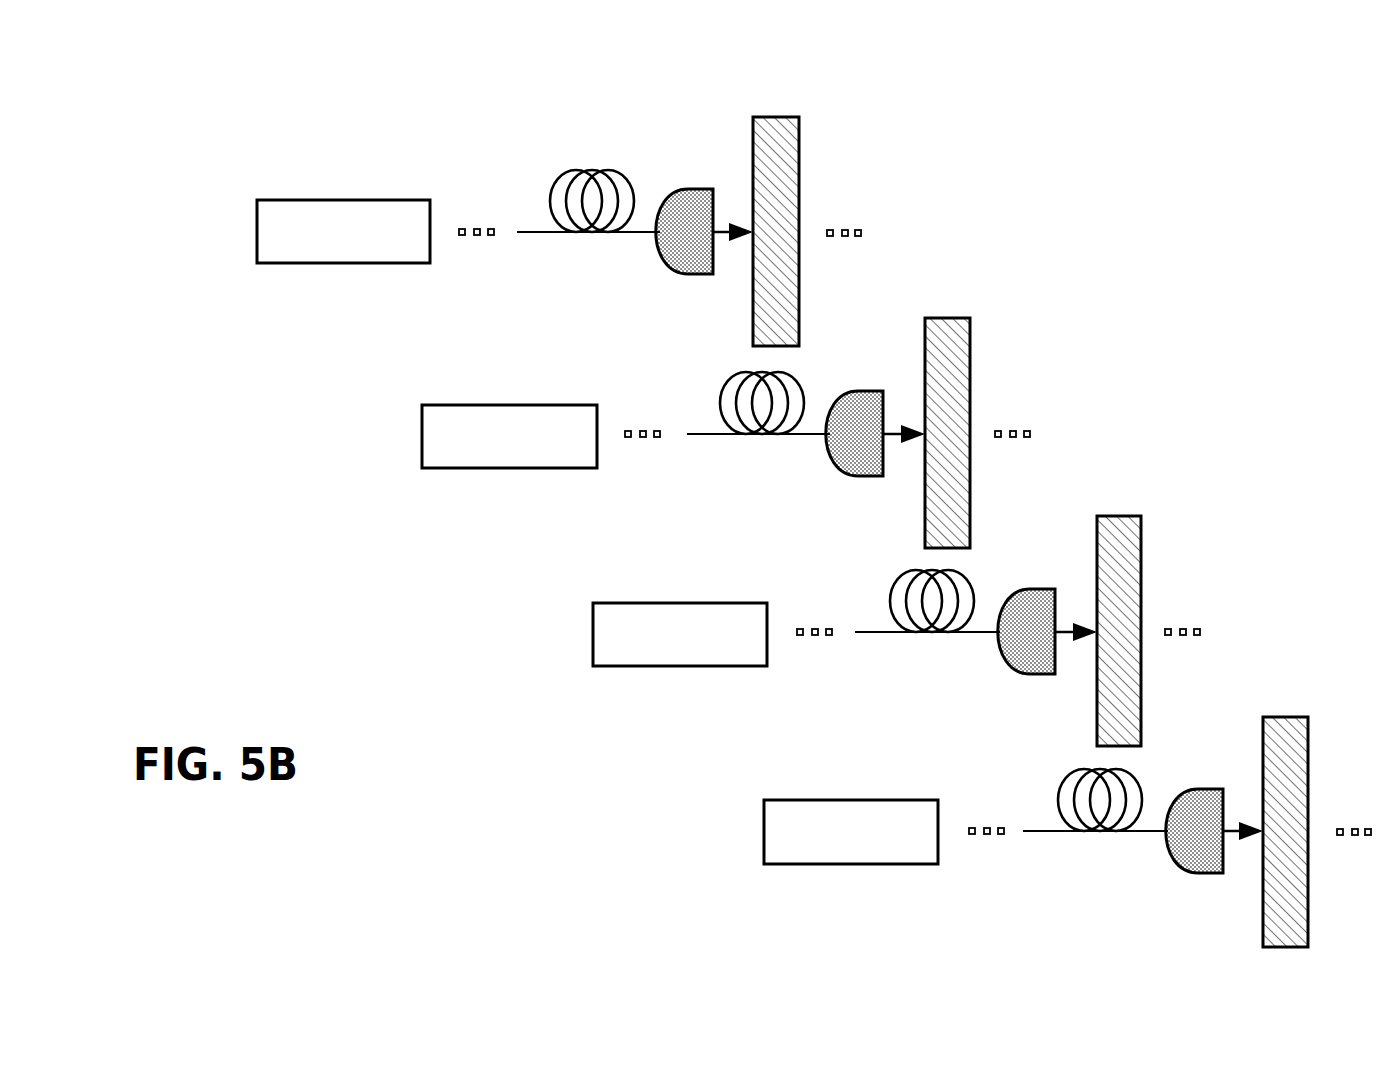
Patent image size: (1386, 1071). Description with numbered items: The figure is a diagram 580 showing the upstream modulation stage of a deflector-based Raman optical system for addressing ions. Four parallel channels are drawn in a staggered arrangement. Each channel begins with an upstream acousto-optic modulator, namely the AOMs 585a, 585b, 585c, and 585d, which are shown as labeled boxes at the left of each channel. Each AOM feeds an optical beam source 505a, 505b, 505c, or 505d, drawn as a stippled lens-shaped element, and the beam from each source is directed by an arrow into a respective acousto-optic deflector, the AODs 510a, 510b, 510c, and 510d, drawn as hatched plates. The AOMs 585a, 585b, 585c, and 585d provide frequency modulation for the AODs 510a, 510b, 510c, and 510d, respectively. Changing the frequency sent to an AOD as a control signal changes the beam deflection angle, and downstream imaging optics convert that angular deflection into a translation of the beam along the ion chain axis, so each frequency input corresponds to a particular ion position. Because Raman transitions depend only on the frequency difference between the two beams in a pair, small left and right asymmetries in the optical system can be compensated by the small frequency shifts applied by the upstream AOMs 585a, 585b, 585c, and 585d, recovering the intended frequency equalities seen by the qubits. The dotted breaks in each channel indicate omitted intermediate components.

The diagram 580 is at (228, 76).
The upstream AOM 585a is at (348, 200).
The upstream AOM 585b is at (513, 405).
The upstream AOM 585c is at (685, 603).
The upstream AOM 585d is at (858, 800).
The optical beam source 505a is at (697, 189).
The optical beam source 505b is at (866, 391).
The optical beam source 505c is at (1040, 589).
The optical beam source 505d is at (1207, 789).
The AOD 510a is at (779, 117).
The AOD 510b is at (950, 318).
The AOD 510c is at (1117, 516).
The AOD 510d is at (1286, 717).